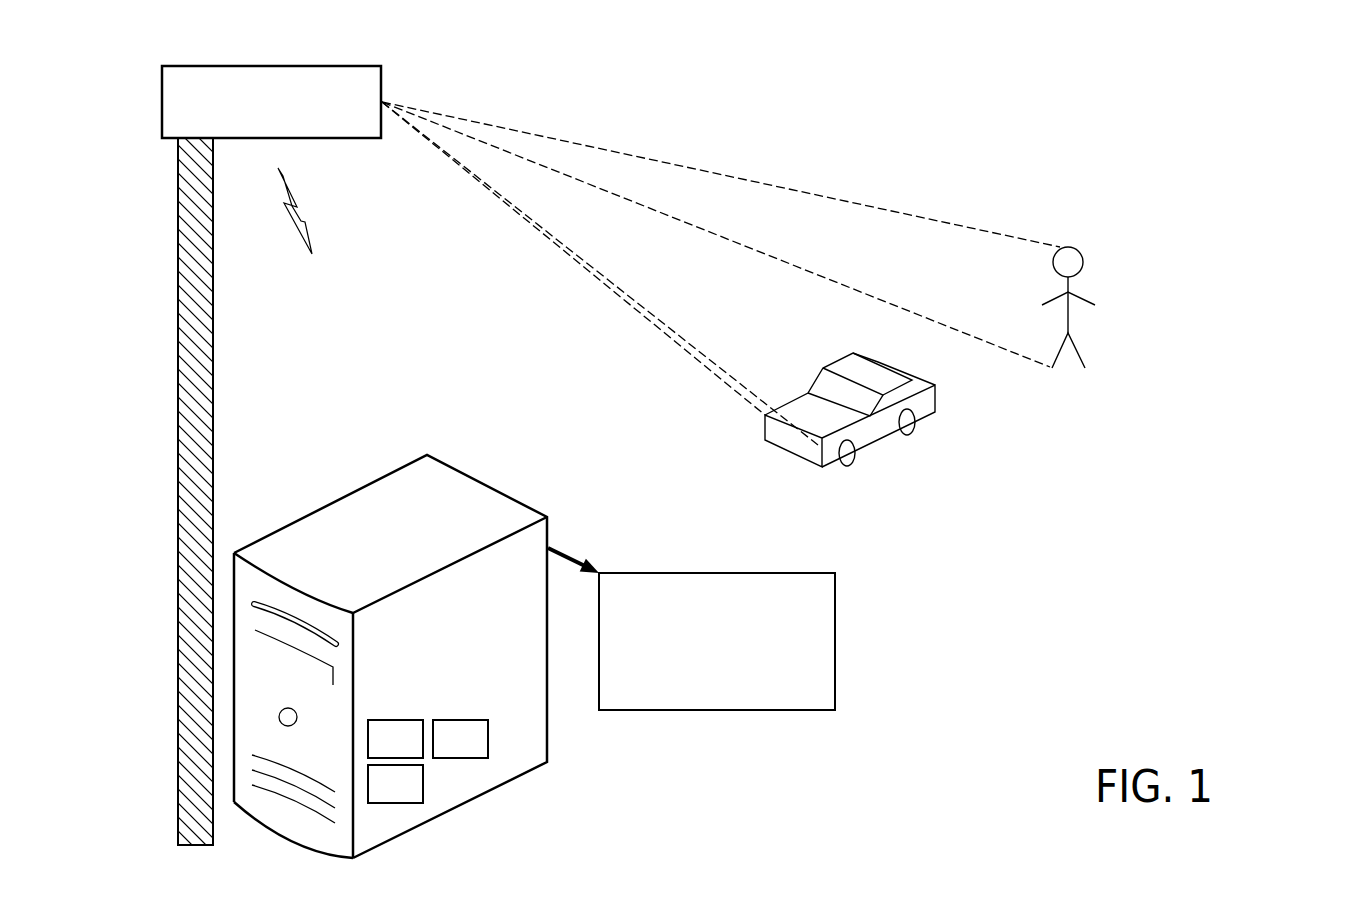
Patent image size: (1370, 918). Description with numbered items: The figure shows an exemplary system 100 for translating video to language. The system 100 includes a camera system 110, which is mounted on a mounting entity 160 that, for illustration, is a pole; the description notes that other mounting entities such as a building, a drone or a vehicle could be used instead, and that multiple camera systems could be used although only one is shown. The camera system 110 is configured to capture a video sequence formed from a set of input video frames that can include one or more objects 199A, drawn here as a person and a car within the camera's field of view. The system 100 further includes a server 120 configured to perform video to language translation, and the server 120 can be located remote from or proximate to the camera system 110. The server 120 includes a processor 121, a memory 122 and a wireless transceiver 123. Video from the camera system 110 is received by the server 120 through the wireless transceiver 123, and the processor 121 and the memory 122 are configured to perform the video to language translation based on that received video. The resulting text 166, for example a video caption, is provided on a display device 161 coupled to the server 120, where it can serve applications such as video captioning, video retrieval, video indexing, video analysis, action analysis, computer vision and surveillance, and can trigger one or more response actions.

The system 100 is at (1268, 78).
The camera system 110 is at (271, 102).
The server 120 is at (390, 656).
The processor 121 is at (395, 739).
The memory 122 is at (395, 784).
The wireless transceiver 123 is at (460, 739).
The mounting entity 160 is at (230, 368).
The display device 161 is at (846, 580).
The text 166 is at (806, 644).
The objects 199A is at (1082, 226).